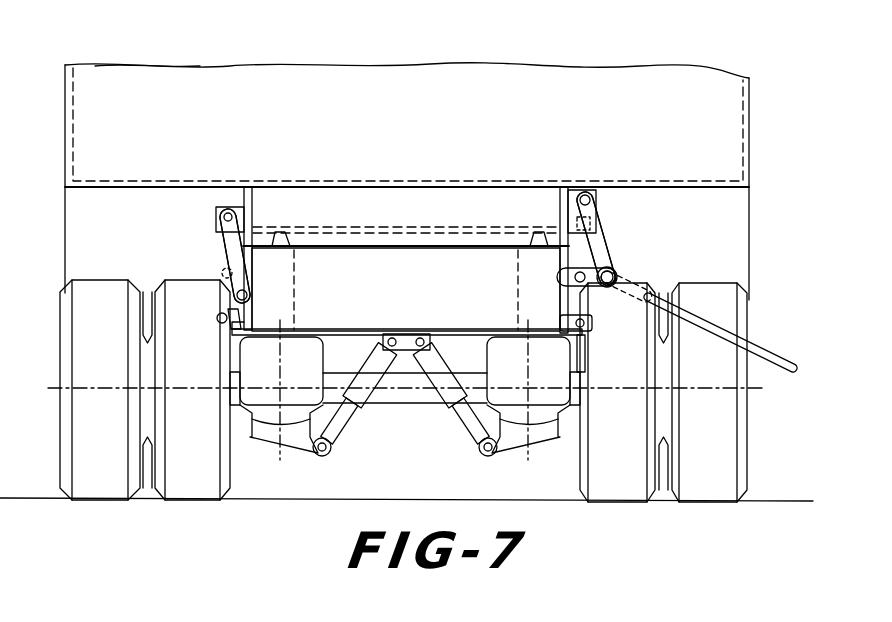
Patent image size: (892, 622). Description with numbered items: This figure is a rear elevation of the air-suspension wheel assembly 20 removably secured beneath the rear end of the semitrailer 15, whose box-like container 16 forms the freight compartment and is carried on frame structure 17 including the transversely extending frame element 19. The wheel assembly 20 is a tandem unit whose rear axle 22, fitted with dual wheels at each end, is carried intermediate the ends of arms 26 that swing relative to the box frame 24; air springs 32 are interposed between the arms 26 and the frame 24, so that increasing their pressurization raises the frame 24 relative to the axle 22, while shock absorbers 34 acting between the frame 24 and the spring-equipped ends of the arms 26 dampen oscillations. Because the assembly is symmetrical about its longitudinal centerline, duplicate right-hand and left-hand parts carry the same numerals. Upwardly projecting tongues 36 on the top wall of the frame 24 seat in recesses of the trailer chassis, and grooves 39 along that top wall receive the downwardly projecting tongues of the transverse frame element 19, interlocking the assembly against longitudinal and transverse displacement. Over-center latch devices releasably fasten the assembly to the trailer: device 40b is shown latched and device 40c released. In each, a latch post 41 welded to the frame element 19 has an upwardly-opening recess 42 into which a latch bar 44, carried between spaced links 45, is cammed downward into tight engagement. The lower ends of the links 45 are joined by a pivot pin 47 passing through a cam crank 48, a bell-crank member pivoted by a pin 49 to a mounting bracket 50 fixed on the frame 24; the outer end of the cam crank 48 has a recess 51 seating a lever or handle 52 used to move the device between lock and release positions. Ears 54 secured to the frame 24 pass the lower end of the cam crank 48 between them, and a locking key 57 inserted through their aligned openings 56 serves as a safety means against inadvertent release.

The semitrailer 15 is at (207, 84).
The box-like container 16 is at (158, 72).
The frame structure 17 is at (126, 178).
The transversely extending frame element 19 is at (414, 193).
The air-suspension wheel assembly 20 is at (193, 495).
The rear axle 22 is at (404, 396).
The box frame 24 is at (392, 297).
The arm 26 is at (300, 443).
The air spring 32 is at (270, 437).
The shock absorber 34 is at (349, 425).
The tongue or rib 36 is at (278, 241).
The recess or groove 39 is at (342, 232).
The over-center latch device 40b is at (212, 232).
The over-center latch device 40c is at (612, 238).
The latch post 41 is at (248, 196).
The upwardly-opening recess 42 is at (591, 207).
The latch bar 44 is at (226, 208).
The link 45 is at (235, 243).
The pivot pin 47 is at (237, 295).
The cam crank 48 is at (596, 324).
The pin 49 is at (576, 283).
The mounting bracket 50 is at (565, 275).
The recess 51 is at (634, 295).
The lever or handle 52 is at (780, 360).
The ear 54 is at (240, 336).
The opening 56 is at (578, 353).
The locking key 57 is at (217, 319).